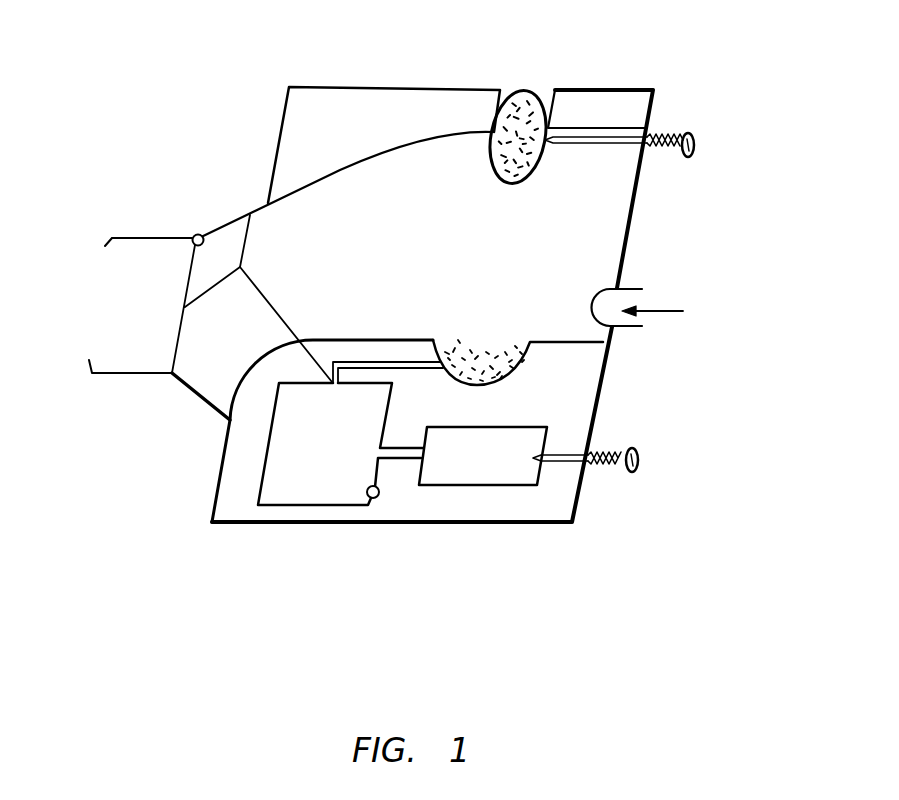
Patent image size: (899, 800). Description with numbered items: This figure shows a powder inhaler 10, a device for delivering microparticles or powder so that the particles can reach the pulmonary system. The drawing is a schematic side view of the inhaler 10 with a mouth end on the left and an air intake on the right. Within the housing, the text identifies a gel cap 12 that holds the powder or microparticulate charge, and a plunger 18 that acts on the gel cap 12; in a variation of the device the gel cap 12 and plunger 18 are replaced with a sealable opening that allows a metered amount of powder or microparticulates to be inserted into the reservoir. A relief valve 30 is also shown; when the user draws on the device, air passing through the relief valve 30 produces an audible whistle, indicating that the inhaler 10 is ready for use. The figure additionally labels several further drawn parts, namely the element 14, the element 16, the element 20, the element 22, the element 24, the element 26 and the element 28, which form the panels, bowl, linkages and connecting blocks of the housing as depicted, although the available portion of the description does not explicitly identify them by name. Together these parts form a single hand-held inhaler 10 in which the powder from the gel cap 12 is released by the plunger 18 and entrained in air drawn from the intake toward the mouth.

The inhaler 10 is at (160, 482).
The gel cap 12 is at (540, 88).
The filter element 14 is at (512, 117).
The upper housing panel 16 is at (345, 143).
The plunger 18 is at (695, 152).
The bowl 20 is at (502, 349).
The pivot 22 is at (200, 232).
The smoking material 24 is at (497, 365).
The lower block 26 is at (513, 473).
The chamber block 28 is at (328, 487).
The relief valve 30 is at (378, 497).